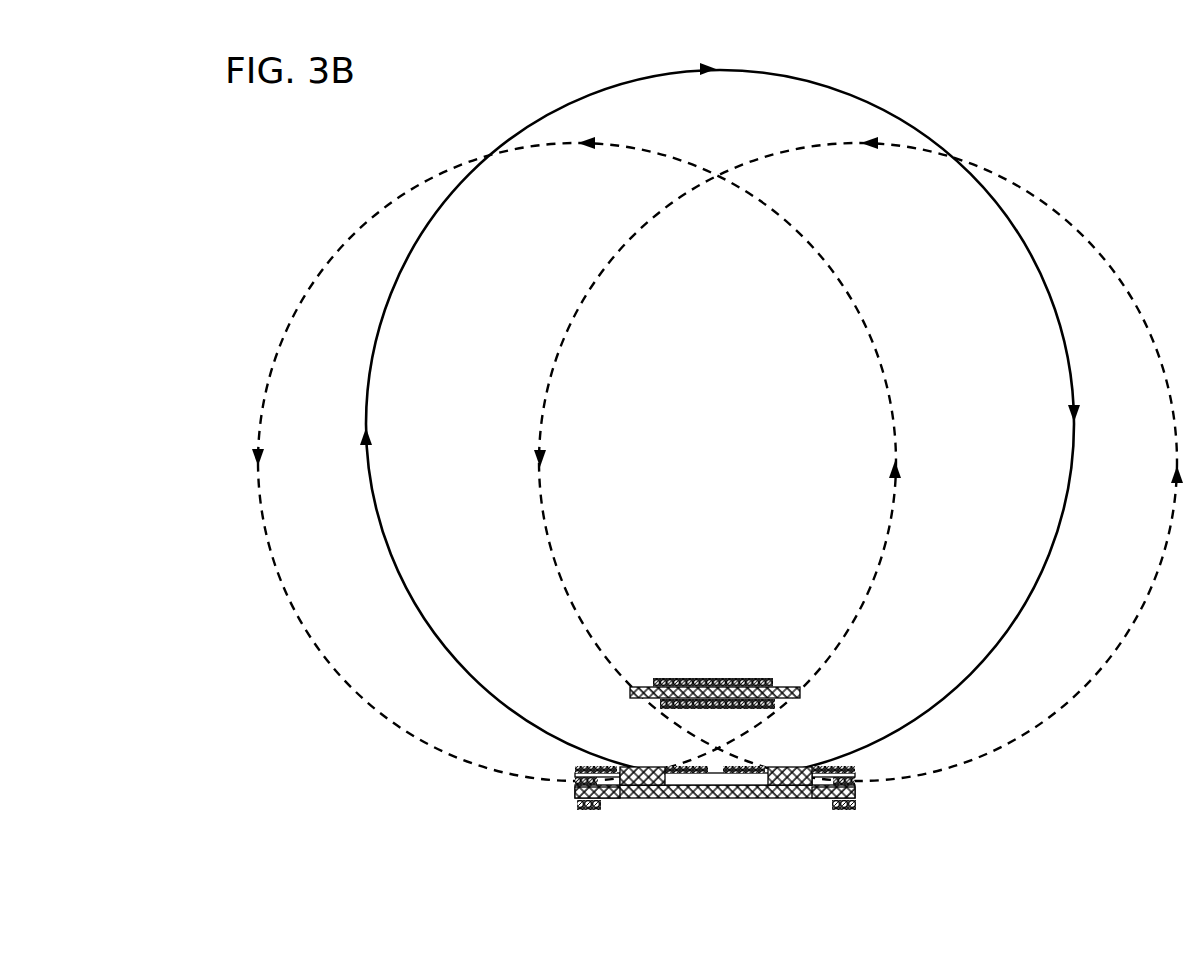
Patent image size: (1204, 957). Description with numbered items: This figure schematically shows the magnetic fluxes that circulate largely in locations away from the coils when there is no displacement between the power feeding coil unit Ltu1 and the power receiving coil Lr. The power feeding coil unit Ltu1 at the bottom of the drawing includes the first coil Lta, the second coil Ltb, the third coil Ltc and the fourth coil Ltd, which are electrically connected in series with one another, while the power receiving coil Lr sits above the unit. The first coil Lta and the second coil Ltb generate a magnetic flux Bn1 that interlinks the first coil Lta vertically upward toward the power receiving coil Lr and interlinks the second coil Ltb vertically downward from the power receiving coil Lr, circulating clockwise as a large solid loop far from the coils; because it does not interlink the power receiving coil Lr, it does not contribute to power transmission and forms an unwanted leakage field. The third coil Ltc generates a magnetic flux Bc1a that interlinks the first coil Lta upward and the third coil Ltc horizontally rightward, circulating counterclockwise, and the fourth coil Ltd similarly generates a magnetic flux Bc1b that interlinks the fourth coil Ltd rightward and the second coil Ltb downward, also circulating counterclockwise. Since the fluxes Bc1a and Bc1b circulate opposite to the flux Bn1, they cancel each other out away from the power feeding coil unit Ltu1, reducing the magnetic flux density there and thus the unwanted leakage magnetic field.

The magnetic flux Bn1 is at (927, 132).
The magnetic flux Bc1a is at (397, 198).
The magnetic flux Bc1b is at (1052, 207).
The power receiving coil Lr is at (736, 678).
The power feeding coil unit Ltu1 is at (726, 834).
The first coil Lta is at (662, 785).
The second coil Ltb is at (803, 787).
The third coil Ltc is at (591, 812).
The fourth coil Ltd is at (850, 831).